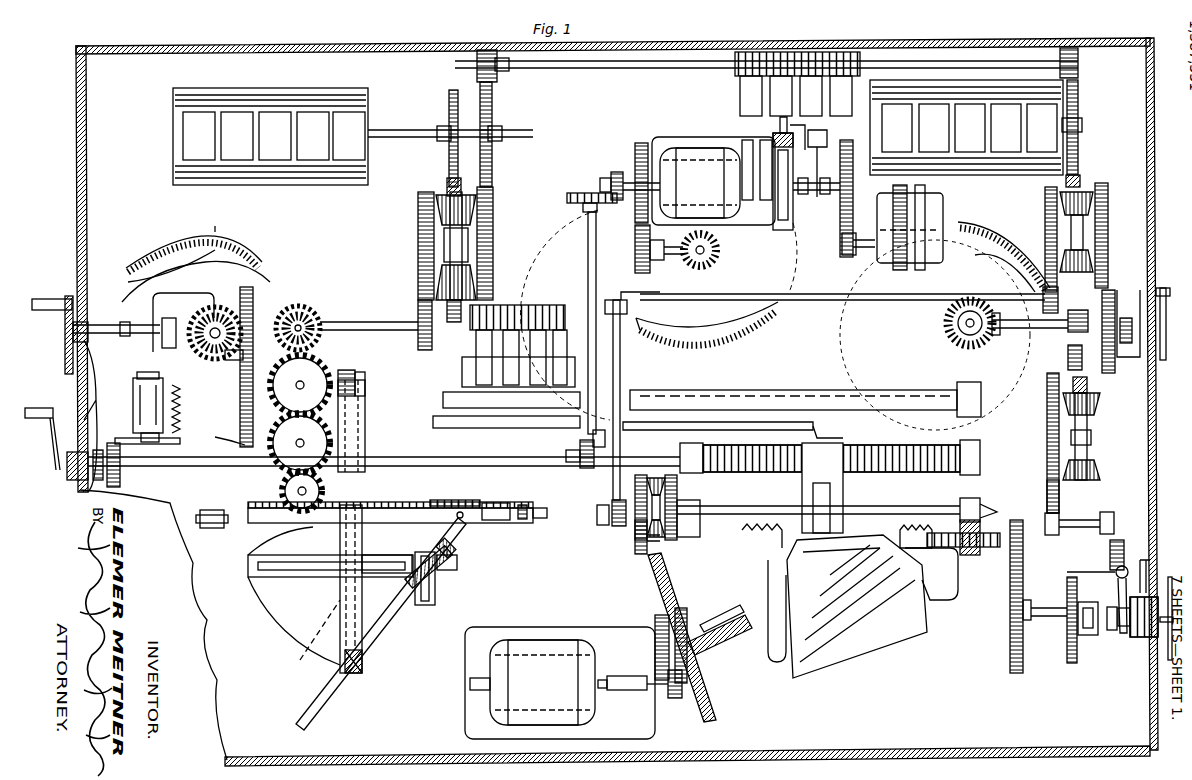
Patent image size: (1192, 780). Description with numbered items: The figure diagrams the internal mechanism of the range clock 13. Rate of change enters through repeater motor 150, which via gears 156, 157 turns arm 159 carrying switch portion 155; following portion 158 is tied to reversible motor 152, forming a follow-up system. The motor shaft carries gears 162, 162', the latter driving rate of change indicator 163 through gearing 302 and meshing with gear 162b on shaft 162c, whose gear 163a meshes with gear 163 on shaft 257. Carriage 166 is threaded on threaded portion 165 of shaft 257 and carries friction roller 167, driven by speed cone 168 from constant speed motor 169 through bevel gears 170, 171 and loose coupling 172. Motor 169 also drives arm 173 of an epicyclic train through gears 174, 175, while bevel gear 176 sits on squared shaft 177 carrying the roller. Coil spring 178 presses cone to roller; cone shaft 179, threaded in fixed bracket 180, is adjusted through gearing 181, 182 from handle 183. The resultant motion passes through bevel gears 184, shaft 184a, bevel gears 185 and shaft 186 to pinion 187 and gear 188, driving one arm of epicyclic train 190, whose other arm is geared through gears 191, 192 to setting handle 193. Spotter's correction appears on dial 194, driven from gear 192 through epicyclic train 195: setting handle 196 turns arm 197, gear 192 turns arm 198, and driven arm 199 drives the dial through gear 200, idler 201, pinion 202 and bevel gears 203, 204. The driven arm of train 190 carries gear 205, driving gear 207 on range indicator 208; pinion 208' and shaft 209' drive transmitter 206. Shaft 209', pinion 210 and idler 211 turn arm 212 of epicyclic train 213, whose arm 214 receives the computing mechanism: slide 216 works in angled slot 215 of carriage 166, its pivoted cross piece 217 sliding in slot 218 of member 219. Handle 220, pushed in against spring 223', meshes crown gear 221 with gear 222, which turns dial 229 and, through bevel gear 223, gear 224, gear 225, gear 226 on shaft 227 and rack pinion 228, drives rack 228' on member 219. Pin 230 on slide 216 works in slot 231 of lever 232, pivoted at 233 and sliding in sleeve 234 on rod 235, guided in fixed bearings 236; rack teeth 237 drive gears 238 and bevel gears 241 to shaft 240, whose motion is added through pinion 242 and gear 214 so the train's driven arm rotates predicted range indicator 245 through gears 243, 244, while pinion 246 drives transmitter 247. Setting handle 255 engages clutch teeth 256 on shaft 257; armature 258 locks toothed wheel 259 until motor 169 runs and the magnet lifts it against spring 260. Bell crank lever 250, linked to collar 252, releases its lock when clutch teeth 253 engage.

The range clock 13 is at (76, 108).
The predicted range indicator 245 is at (173, 110).
The range indicator 208 is at (949, 168).
The shaft 209' is at (766, 75).
The pinion 210 is at (477, 66).
The pinion 208' is at (1088, 63).
The transmitter 206 is at (740, 80).
The gear 207 is at (1080, 110).
The gear 205 is at (1080, 181).
The idler 211 is at (492, 110).
The arm of epicyclic train 212 is at (493, 213).
The gear 244 is at (449, 108).
The gear 243 is at (447, 180).
The epicyclic train 213 is at (420, 196).
The arm of epicyclic train 214 is at (418, 238).
The pinion 246 is at (440, 325).
The pinion 242 is at (445, 322).
The transmitter 247 is at (552, 305).
The dial 229 is at (226, 320).
The handle 220 is at (65, 315).
The bevel gear 223 is at (116, 310).
The gear 225 is at (252, 300).
The crown gear 221 is at (205, 326).
The gear 222 is at (240, 300).
The bevel gears 241 is at (318, 312).
The shaft 240 is at (383, 322).
The gear 224 is at (224, 366).
The series of gears 238 is at (290, 462).
The gear 226 is at (229, 438).
The shaft 257 is at (133, 396).
The spring 260 is at (182, 410).
The armature 258 is at (147, 449).
The setting handle 255 is at (50, 445).
The clutch teeth 256 is at (93, 455).
The toothed wheel 259 is at (107, 480).
The slot 215 is at (365, 441).
The rack pinion 228 is at (360, 380).
The shaft 227 is at (366, 392).
The pin 230 is at (390, 524).
The rack teeth 237 is at (448, 500).
The slot 218 is at (305, 555).
The member 219 is at (305, 589).
The lever 232 is at (390, 620).
The slot 231 is at (387, 571).
The pivot 233 is at (364, 660).
The rack 228' is at (310, 630).
The slide 216 is at (435, 585).
The cross piece 217 is at (457, 566).
The sleeve 234 is at (455, 535).
The fixed bearings 236 is at (366, 527).
The rod 235 is at (528, 506).
The gear 162b is at (568, 193).
The shaft 162c is at (588, 245).
The gear 162' is at (612, 150).
The gear 162 is at (652, 196).
The reversible electric motor 152 is at (699, 181).
The gear 302 is at (670, 260).
The switch portion 155 is at (778, 122).
The switch portion 158 is at (782, 230).
The rotatable arm 159 is at (812, 192).
The gear 157 is at (840, 205).
The gear 156 is at (848, 255).
The repeater motor 150 is at (925, 205).
The dial 194 is at (1004, 257).
The shaft 186 is at (840, 302).
The rate of change indicator 163 is at (755, 330).
The bevel gears 185 is at (622, 345).
The gear 163a is at (621, 400).
The shaft 184a is at (605, 441).
The constant speed motor 169 is at (560, 589).
The bevel gears 184 is at (597, 512).
The slidable carriage 166 is at (840, 418).
The worm 165 is at (905, 470).
The friction roller 167 is at (843, 488).
The bevel gear 176 is at (678, 490).
The squared shaft 177 is at (804, 494).
The gear 175 is at (636, 552).
The arm of epicyclic train 173 is at (660, 545).
The gear 174 is at (714, 708).
The bevel gear 171 is at (660, 620).
The bevel gear 170 is at (675, 698).
The flexible coupling 172 is at (722, 638).
The coil spring 178 is at (764, 593).
The speed cone 168 is at (872, 606).
The shaft 179 is at (950, 548).
The fixed bracket 180 is at (986, 544).
The gearing 181 is at (1023, 546).
The gearing 182 is at (1023, 580).
The bell crank lever 250 is at (1115, 572).
The clutch teeth 253 is at (1132, 549).
The setting handle 196 is at (1163, 571).
The coil spring 223' is at (1136, 628).
The handle 183 is at (1173, 627).
The gear 188 is at (1045, 198).
The epicyclic train 190 is at (1108, 193).
The gear 191 is at (1095, 234).
The pinion 187 is at (1043, 290).
The gear 192 is at (1112, 370).
The collar 252 is at (1128, 290).
The setting handle 193 is at (1168, 316).
The pinion 202 is at (1083, 313).
The idler 201 is at (1068, 352).
The bevel gear 203 is at (998, 335).
The bevel gear 204 is at (963, 345).
The gear 200 is at (1073, 383).
The epicyclic train 195 is at (1047, 418).
The driving arm 198 is at (1100, 419).
The arm 197 is at (1047, 462).
The driven arm 199 is at (1079, 522).